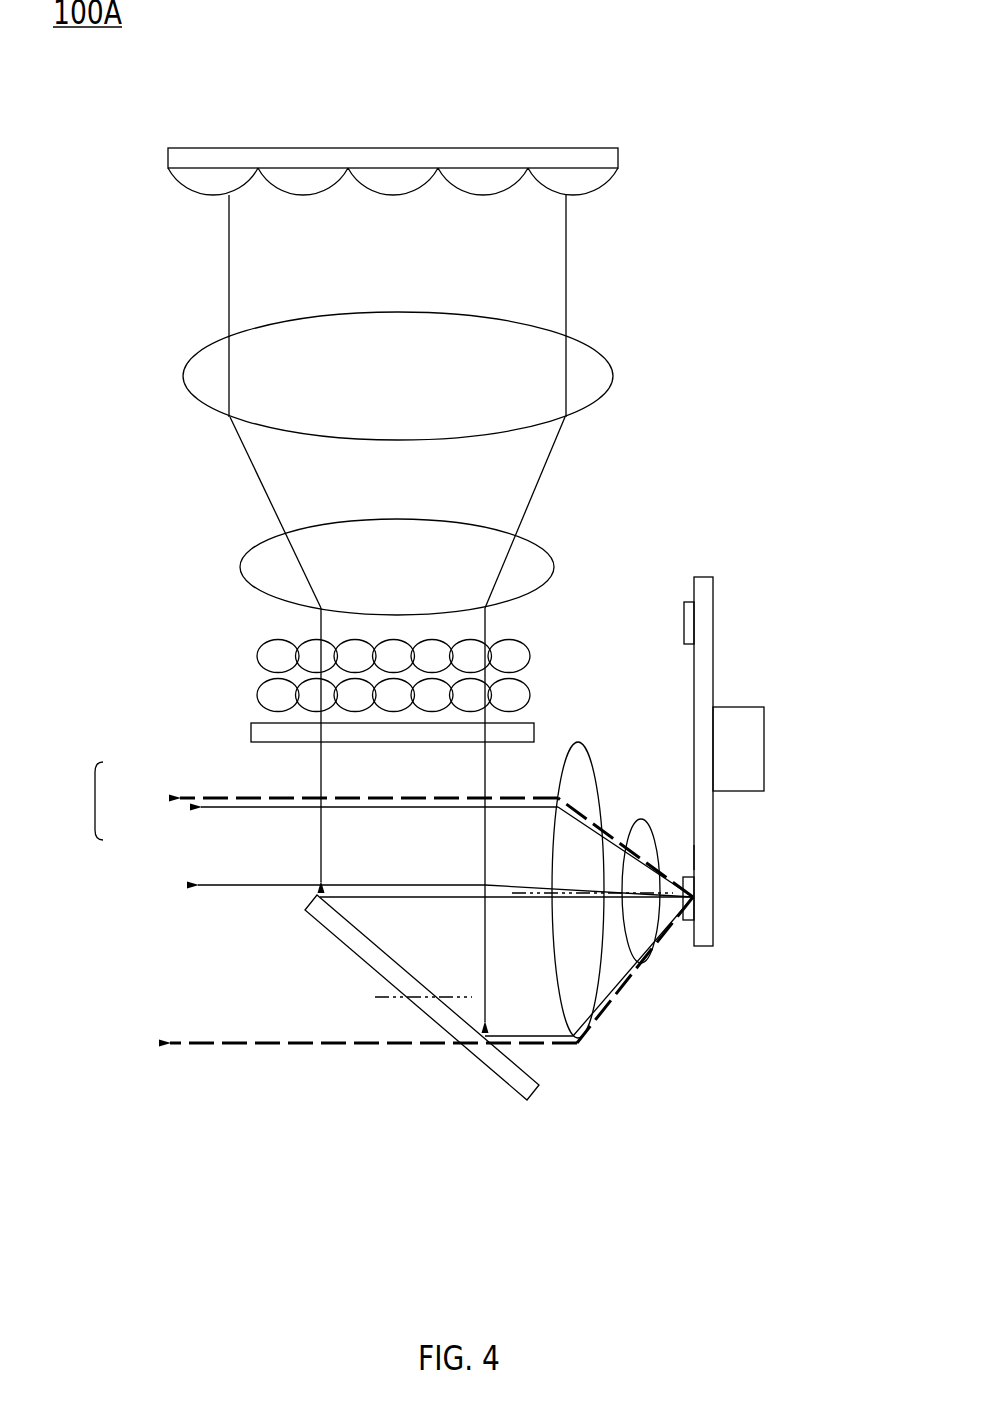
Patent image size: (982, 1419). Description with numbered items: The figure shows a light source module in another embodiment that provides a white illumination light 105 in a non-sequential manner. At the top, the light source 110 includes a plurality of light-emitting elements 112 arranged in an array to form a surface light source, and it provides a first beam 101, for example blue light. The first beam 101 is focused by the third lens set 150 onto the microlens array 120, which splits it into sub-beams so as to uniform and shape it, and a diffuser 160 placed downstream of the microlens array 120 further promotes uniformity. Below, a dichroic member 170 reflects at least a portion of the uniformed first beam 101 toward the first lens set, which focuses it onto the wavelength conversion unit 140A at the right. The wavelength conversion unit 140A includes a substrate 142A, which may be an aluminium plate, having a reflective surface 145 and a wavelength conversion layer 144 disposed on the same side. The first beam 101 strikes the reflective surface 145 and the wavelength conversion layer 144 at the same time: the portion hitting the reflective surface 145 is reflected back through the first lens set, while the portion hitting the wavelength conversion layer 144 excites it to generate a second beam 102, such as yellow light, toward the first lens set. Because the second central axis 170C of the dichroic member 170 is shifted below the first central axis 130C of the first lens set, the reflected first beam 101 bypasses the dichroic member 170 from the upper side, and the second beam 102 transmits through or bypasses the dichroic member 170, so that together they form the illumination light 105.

The light source 110 is at (592, 157).
The light-emitting element 112 is at (193, 178).
The first beam 101 is at (566, 234).
The second beam 102 is at (217, 797).
The illumination light 105 is at (77, 801).
The microlens array 120 is at (528, 657).
The first central axis 130C is at (522, 898).
The wavelength conversion unit 140A is at (749, 788).
The substrate 142A is at (707, 673).
The wavelength conversion layer 144 is at (689, 917).
The reflective surface 145 is at (694, 860).
The third lens set 150 is at (555, 566).
The diffuser 160 is at (255, 732).
The dichroic member 170 is at (323, 915).
The second central axis 170C is at (385, 998).